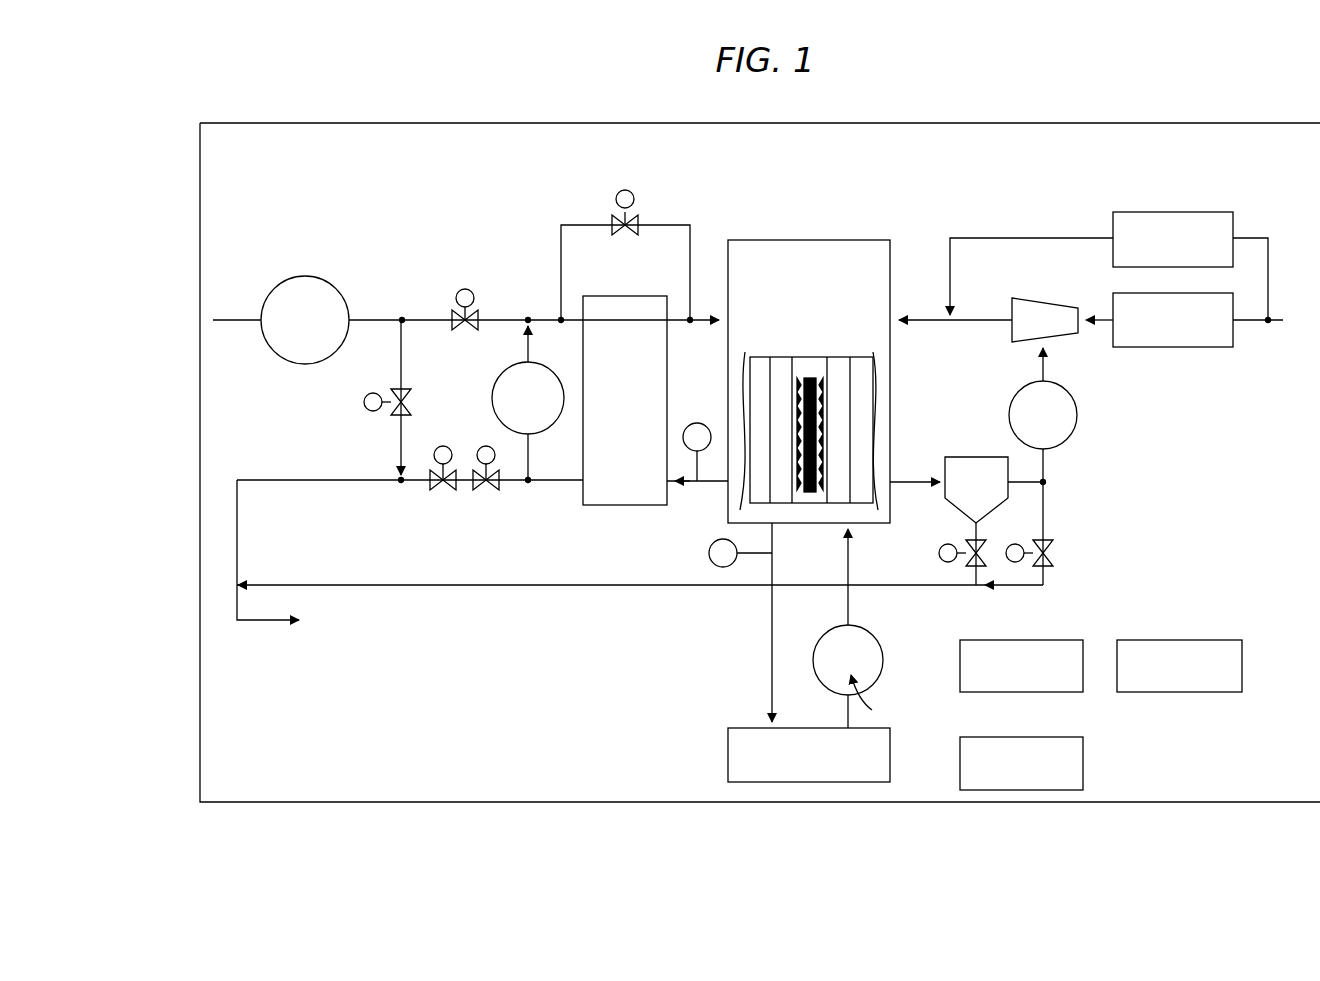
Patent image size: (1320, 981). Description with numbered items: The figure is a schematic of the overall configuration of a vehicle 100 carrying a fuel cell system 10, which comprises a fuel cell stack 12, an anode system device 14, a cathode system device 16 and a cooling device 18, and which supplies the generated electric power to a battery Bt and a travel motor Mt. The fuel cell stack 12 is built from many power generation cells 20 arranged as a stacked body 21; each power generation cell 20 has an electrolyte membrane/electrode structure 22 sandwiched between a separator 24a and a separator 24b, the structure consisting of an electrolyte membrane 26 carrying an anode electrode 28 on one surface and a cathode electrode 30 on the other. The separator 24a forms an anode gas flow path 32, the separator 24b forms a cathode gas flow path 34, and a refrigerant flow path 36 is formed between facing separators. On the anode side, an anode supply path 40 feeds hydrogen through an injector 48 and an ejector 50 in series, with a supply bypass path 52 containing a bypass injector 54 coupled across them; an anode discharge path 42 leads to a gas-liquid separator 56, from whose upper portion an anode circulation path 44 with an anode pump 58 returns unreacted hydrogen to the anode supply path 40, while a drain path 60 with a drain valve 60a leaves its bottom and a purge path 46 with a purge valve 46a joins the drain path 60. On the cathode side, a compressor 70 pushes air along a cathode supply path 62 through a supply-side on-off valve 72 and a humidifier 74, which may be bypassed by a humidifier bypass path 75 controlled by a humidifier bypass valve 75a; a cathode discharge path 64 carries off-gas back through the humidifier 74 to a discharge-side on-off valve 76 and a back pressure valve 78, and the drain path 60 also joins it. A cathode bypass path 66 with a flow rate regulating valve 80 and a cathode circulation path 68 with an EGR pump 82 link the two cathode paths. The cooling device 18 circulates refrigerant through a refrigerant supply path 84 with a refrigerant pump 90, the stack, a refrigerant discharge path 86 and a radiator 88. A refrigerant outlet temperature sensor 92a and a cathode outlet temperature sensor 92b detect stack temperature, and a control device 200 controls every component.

The vehicle 100 is at (602, 121).
The fuel cell system 10 is at (532, 202).
The fuel cell stack 12 is at (728, 233).
The anode system device 14 is at (1074, 217).
The cathode system device 16 is at (371, 270).
The cooling device 18 is at (700, 765).
The power generation cell 20 is at (820, 505).
The stacked body 21 is at (856, 507).
The electrolyte membrane/electrode structure 22 is at (779, 309).
The separator 24a is at (826, 400).
The separator 24b is at (794, 402).
The electrolyte membrane 26 is at (810, 376).
The anode electrode 28 is at (849, 370).
The cathode electrode 30 is at (772, 370).
The anode gas flow path 32 is at (838, 434).
The cathode gas flow path 34 is at (788, 470).
The refrigerant flow path 36 is at (832, 466).
The anode supply path 40 is at (914, 323).
The anode discharge path 42 is at (903, 485).
The anode circulation path 44 is at (1048, 471).
The purge path 46 is at (1048, 518).
The purge valve 46a is at (1055, 554).
The injector 48 is at (1178, 348).
The ejector 50 is at (1032, 297).
The supply bypass path 52 is at (978, 238).
The bypass injector 54 is at (1173, 211).
The gas-liquid separator 56 is at (971, 456).
The anode pump 58 is at (1080, 408).
The drain path 60 is at (952, 590).
The drain valve 60a is at (942, 560).
The cathode supply path 62 is at (545, 316).
The cathode discharge path 64 is at (561, 484).
The cathode bypass path 66 is at (398, 446).
The cathode circulation path 68 is at (534, 458).
The compressor 70 is at (301, 276).
The supply-side on-off valve 72 is at (471, 289).
The humidifier 74 is at (623, 295).
The humidifier bypass path 75 is at (596, 224).
The humidifier bypass valve 75a is at (634, 190).
The discharge-side on-off valve 76 is at (486, 496).
The back pressure valve 78 is at (443, 496).
The flow rate regulating valve 80 is at (364, 402).
The EGR pump 82 is at (496, 384).
The refrigerant supply path 84 is at (851, 612).
The refrigerant discharge path 86 is at (768, 626).
The radiator 88 is at (727, 744).
The refrigerant pump 90 is at (882, 645).
The refrigerant outlet temperature sensor 92a is at (709, 555).
The cathode outlet temperature sensor 92b is at (683, 438).
The control device 200 is at (1186, 640).
The battery Bt is at (1022, 640).
The travel motor Mt is at (1008, 737).